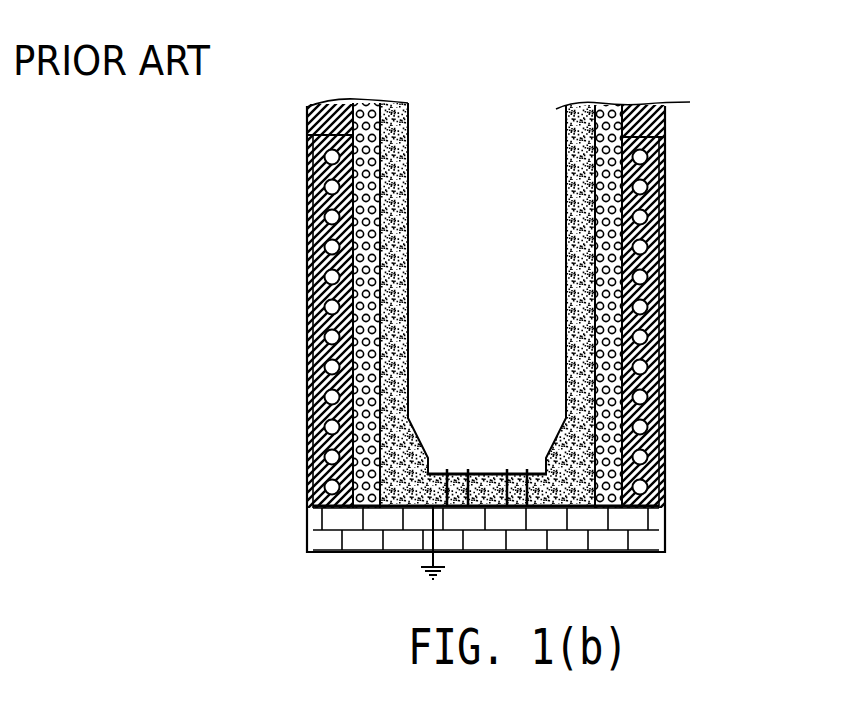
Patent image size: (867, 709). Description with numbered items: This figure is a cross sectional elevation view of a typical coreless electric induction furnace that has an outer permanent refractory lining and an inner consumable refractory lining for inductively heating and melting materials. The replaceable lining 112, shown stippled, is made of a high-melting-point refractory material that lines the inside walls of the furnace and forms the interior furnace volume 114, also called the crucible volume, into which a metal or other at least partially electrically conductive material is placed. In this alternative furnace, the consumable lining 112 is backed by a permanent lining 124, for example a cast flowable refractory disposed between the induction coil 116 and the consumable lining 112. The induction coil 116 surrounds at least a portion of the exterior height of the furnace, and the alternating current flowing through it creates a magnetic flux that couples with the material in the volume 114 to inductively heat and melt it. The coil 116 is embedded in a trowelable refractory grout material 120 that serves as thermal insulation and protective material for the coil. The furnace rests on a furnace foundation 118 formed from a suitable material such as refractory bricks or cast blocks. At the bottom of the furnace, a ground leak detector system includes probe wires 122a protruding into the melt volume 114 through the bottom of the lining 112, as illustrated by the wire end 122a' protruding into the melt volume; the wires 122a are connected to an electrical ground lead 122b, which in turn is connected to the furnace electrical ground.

The consumable refractory lining 112 is at (409, 377).
The interior furnace volume 114 is at (552, 295).
The induction coil 116 is at (646, 158).
The furnace foundation 118 is at (552, 540).
The trowelable refractory material 120 is at (655, 209).
The probe wires 122a is at (487, 462).
The wire end 122a' is at (474, 463).
The electrical ground lead 122b is at (437, 558).
The permanent lining 124 is at (596, 101).